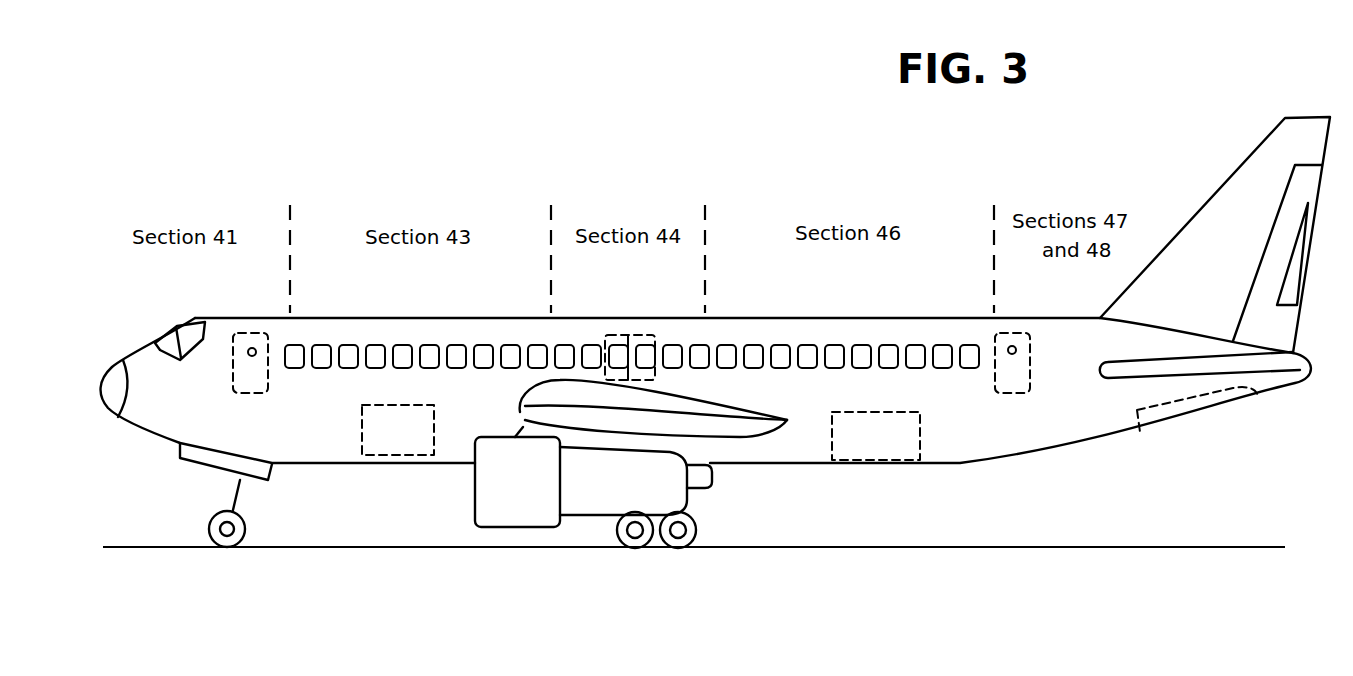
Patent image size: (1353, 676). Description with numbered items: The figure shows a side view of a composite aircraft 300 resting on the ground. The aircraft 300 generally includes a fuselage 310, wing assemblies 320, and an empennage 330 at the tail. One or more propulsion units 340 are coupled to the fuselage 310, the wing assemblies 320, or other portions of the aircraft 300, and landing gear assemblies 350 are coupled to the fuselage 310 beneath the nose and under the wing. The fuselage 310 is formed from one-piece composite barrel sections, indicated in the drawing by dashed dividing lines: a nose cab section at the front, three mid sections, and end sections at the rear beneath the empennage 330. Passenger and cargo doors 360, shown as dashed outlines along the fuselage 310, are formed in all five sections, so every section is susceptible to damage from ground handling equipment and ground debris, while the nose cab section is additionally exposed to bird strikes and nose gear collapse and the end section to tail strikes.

The composite aircraft 300 is at (270, 136).
The fuselage 310 is at (458, 318).
The wing assemblies 320 is at (745, 437).
The empennage 330 is at (1240, 167).
The propulsion units 340 is at (503, 527).
The landing gear assemblies 350 is at (233, 503).
The passenger and cargo doors 360 is at (237, 337).